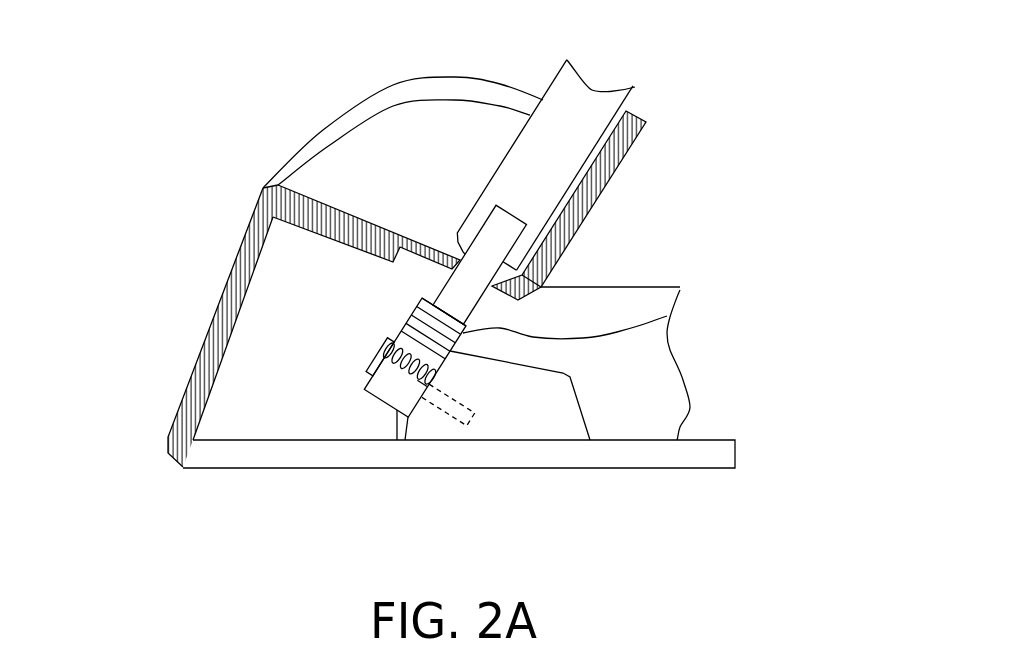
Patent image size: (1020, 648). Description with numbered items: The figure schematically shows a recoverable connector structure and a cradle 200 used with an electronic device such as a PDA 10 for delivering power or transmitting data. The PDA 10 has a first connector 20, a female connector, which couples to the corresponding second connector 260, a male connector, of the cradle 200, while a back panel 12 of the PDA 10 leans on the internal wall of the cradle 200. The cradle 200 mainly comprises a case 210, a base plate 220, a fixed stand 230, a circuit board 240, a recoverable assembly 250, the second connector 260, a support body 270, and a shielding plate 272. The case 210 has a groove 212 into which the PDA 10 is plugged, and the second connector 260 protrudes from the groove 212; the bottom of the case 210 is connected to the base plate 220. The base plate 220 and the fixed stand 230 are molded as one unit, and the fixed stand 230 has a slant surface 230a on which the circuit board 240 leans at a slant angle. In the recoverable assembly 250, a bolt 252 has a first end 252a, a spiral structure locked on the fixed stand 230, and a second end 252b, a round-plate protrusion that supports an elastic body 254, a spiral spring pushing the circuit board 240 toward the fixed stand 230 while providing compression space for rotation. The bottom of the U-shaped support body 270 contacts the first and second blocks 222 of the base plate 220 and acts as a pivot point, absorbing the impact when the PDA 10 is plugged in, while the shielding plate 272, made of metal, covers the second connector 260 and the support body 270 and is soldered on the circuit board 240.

The PDA 10 is at (585, 92).
The back panel 12 is at (598, 151).
The first connector 20 is at (506, 225).
The cradle 200 is at (812, 532).
The case 210 is at (323, 130).
The groove 212 is at (262, 193).
The base plate 220 is at (262, 458).
The first and second blocks 222 is at (399, 421).
The fixed stand 230 is at (560, 407).
The slant surface 230a is at (453, 368).
The circuit board 240 is at (667, 317).
The recoverable assembly 250 is at (103, 255).
The bolt 252 is at (393, 338).
The first end 252a is at (478, 416).
The second end 252b is at (361, 367).
The elastic body 254 is at (390, 340).
The second connector 260 is at (470, 293).
The support body 270 is at (378, 390).
The shielding plate 272 is at (435, 296).